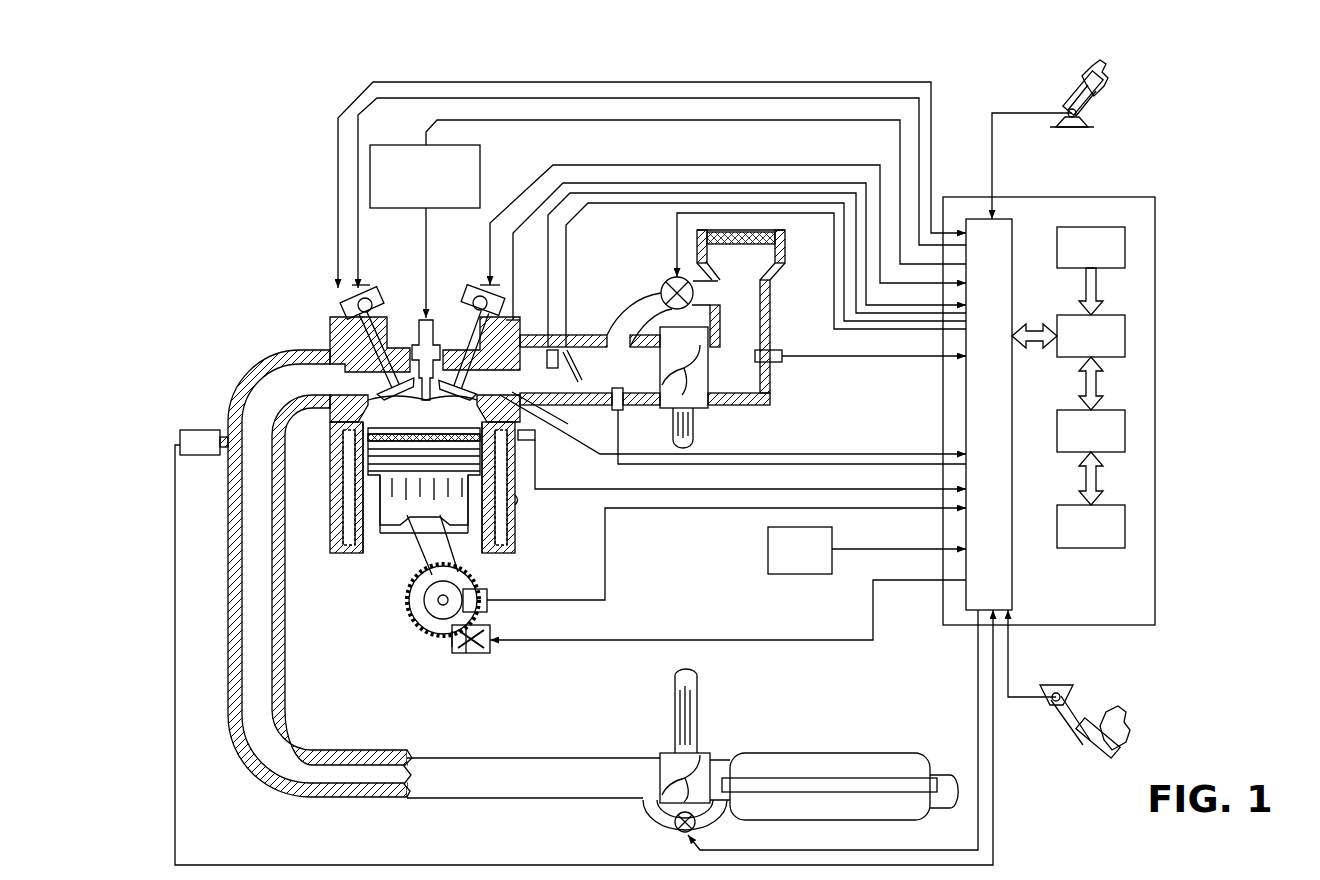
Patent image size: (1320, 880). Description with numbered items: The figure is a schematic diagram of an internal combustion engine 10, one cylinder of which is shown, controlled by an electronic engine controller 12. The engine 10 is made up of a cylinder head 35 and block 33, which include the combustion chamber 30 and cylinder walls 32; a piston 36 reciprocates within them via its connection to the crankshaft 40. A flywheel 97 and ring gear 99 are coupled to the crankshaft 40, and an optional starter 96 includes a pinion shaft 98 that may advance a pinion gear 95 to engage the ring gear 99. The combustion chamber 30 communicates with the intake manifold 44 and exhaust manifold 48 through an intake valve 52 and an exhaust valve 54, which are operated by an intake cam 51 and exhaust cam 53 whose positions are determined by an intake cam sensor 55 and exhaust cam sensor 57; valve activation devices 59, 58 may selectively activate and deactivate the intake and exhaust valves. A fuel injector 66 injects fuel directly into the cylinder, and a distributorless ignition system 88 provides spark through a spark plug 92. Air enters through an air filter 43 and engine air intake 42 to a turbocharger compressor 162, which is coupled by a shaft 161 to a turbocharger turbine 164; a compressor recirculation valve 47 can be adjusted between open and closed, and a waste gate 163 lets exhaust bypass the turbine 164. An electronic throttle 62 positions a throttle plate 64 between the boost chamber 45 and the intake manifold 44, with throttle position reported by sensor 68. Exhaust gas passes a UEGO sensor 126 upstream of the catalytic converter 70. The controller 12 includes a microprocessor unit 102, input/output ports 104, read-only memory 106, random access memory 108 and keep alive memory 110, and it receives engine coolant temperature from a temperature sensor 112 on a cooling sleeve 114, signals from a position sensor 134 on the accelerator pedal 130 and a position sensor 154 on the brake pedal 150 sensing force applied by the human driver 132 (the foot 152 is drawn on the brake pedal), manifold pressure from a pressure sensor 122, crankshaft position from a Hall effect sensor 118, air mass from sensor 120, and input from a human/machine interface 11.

The internal combustion engine 10 is at (270, 277).
The human/machine interface 11 is at (867, 550).
The electronic engine controller 12 is at (1155, 200).
The combustion chamber 30 is at (423, 407).
The cylinder walls 32 is at (372, 545).
The block 33 is at (332, 455).
The cylinder head 35 is at (330, 322).
The piston 36 is at (405, 560).
The crankshaft 40 is at (432, 625).
The engine air intake 42 is at (622, 252).
The air filter 43 is at (748, 245).
The intake manifold 44 is at (522, 381).
The boost chamber 45 is at (614, 381).
The compressor recirculation valve 47 is at (668, 282).
The exhaust manifold 48 is at (289, 387).
The intake cam 51 is at (487, 290).
The intake valve 52 is at (470, 372).
The exhaust cam 53 is at (365, 292).
The exhaust valve 54 is at (342, 362).
The intake cam sensor 55 is at (503, 313).
The exhaust cam sensor 57 is at (346, 305).
The valve activation device 58 is at (378, 306).
The valve activation device 59 is at (476, 312).
The electronic throttle 62 is at (572, 366).
The throttle plate 64 is at (576, 384).
The fuel injector 66 is at (525, 410).
The throttle position sensor 68 is at (512, 344).
The catalytic converter 70 is at (765, 753).
The distributorless ignition system 88 is at (384, 145).
The spark plug 92 is at (428, 328).
The pinion gear 95 is at (476, 655).
The starter 96 is at (490, 652).
The flywheel 97 is at (422, 605).
The pinion shaft 98 is at (462, 655).
The ring gear 99 is at (440, 640).
The microprocessor unit 102 is at (1125, 340).
The input/output ports 104 is at (1017, 240).
The read-only memory 106 is at (1125, 248).
The random access memory 108 is at (1125, 432).
The keep alive memory 110 is at (1125, 528).
The temperature sensor 112 is at (532, 442).
The cooling sleeve 114 is at (512, 500).
The Hall effect sensor 118 is at (487, 596).
The air mass sensor 120 is at (782, 356).
The pressure sensor 122 is at (610, 408).
The Universal Exhaust Gas Oxygen sensor 126 is at (180, 436).
The accelerator pedal 130 is at (1055, 97).
The human driver 132 is at (1097, 82).
The position sensor 134 is at (1090, 118).
The brake pedal 150 is at (1072, 742).
The foot 152 is at (1112, 718).
The position sensor 154 is at (1048, 690).
The shaft 161 is at (672, 430).
The turbocharger compressor 162 is at (697, 405).
The waste gate 163 is at (680, 840).
The turbocharger turbine 164 is at (660, 753).